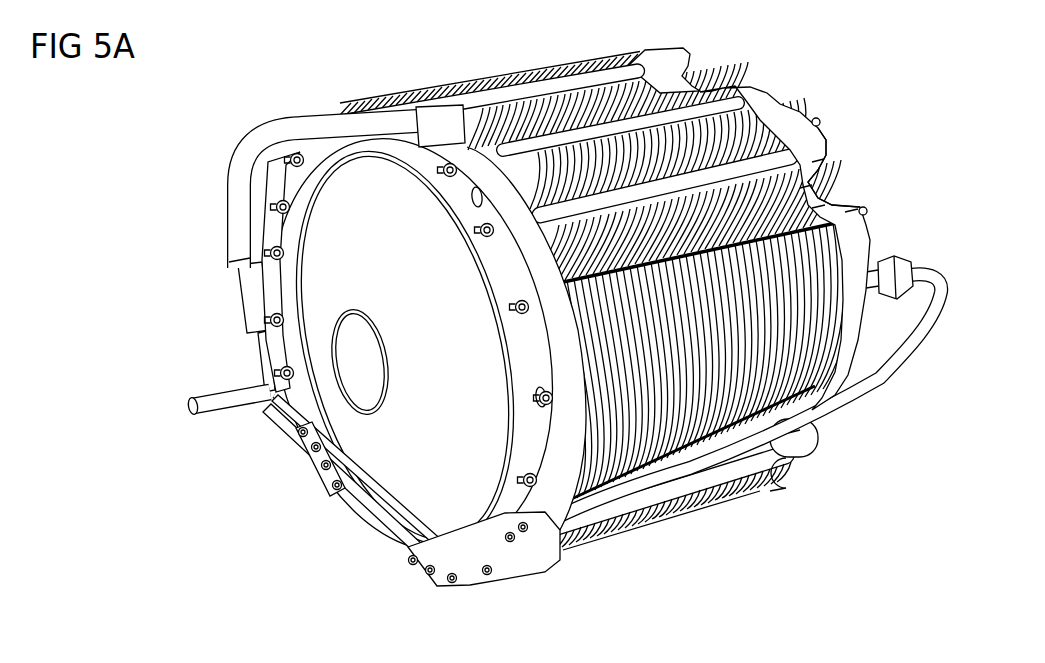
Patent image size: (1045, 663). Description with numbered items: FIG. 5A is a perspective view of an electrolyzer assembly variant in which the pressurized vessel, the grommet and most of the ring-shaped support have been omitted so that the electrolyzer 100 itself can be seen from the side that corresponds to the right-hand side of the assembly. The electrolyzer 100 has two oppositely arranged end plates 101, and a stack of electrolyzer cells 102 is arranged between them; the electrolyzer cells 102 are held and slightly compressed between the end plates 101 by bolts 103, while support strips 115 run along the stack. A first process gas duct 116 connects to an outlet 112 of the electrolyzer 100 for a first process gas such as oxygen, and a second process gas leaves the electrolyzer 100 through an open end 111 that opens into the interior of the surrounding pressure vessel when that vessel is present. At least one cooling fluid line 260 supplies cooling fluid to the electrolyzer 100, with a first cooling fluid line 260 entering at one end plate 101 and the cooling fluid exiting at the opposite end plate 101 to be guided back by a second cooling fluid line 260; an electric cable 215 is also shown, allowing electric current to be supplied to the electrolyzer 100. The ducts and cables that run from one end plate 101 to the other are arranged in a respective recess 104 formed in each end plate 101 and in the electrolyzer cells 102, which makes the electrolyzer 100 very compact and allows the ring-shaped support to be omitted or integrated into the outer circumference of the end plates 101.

The electrolyzer 100 is at (330, 88).
The end plate 101 is at (775, 100).
The electrolyzer cell 102 is at (700, 490).
The bolt 103 is at (546, 93).
The recess 104 is at (833, 180).
The open end 111 is at (300, 458).
The outlet 112 is at (535, 572).
The support strip 115 is at (340, 513).
The first process gas duct 116 is at (387, 500).
The electric cable 215 is at (232, 163).
The cooling fluid line 260 is at (244, 330).